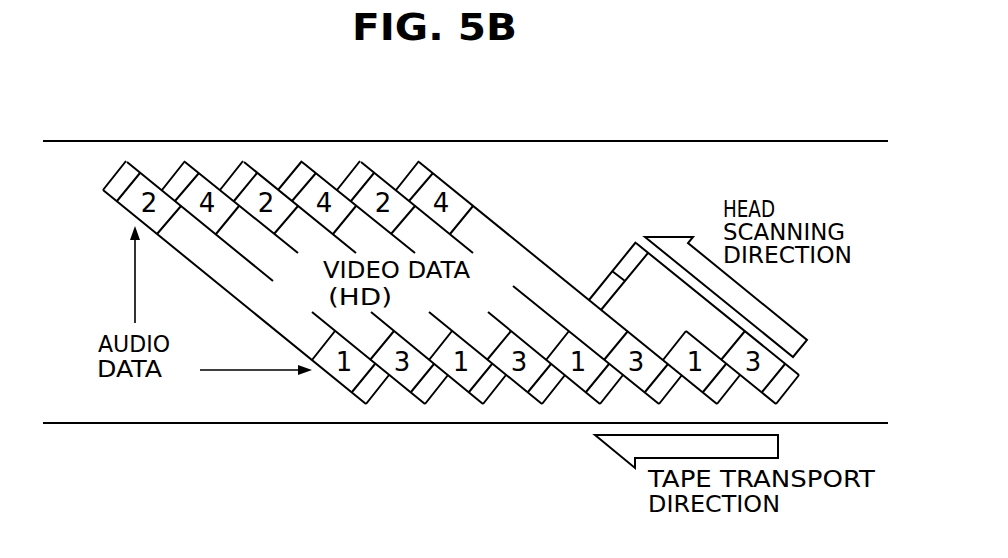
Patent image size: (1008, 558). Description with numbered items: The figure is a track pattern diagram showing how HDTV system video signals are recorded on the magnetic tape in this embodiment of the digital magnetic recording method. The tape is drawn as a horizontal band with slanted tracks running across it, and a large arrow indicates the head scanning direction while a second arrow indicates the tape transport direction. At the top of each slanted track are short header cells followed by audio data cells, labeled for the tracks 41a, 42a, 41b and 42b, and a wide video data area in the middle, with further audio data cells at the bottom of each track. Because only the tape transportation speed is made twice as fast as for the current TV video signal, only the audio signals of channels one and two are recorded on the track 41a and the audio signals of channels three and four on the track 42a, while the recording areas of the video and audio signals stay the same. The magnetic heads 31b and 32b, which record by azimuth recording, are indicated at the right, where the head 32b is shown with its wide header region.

The track 41a is at (113, 174).
The track 42a is at (174, 174).
The track 41b is at (233, 175).
The track 42b is at (291, 175).
The magnetic head 31b is at (590, 294).
The magnetic head 32b is at (612, 269).